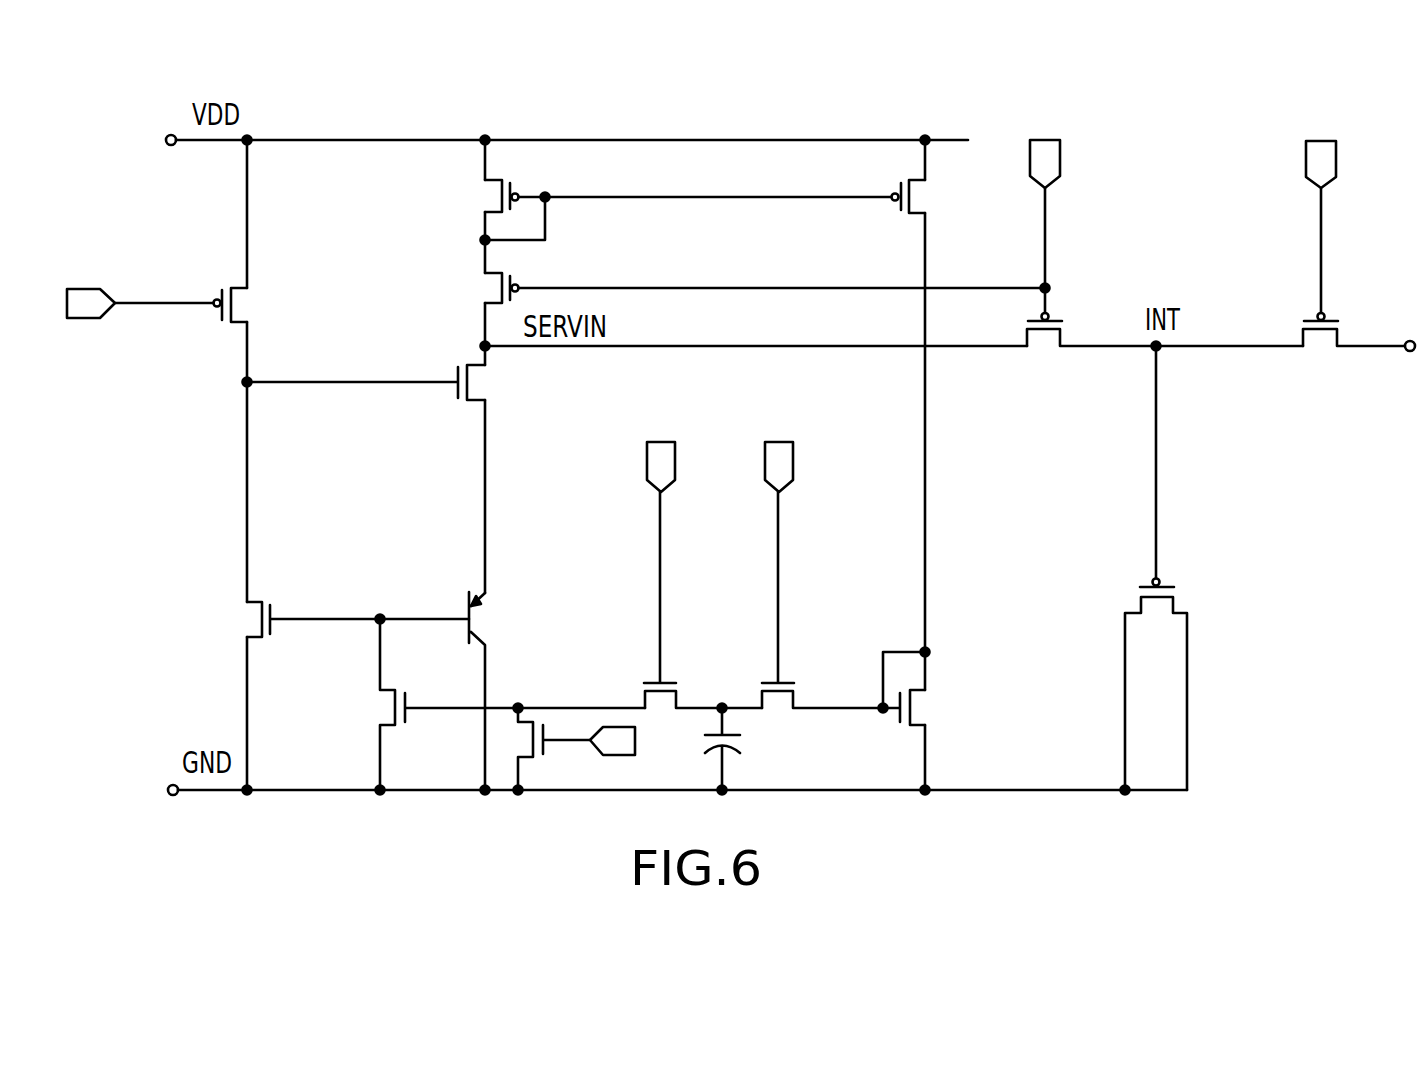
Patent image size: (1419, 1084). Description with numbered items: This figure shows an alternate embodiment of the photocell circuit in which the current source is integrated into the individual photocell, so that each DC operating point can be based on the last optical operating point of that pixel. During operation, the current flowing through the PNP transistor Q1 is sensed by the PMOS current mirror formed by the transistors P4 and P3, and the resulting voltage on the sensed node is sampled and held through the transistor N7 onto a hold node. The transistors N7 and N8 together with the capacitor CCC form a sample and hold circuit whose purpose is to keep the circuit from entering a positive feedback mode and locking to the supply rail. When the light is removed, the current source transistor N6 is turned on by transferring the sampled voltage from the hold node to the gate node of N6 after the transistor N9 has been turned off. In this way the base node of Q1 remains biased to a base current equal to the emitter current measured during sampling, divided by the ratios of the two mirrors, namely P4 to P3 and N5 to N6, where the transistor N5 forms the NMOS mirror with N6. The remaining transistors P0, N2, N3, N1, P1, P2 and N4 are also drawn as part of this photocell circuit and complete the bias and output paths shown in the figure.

The PMOS transistor P0 is at (179, 301).
The PMOS mirror transistor P4 is at (659, 198).
The NMOS transistor N2 is at (736, 273).
The NMOS transistor N3 is at (398, 388).
The NMOS transistor N1 is at (358, 594).
The PNP transistor Q1 is at (497, 689).
The current source transistor N6 is at (476, 704).
The switch transistor N9 is at (565, 749).
The sample and hold transistor N8 is at (681, 592).
The hold capacitor CCC is at (748, 747).
The sampling transistor N7 is at (800, 592).
The PMOS mirror transistor P3 is at (931, 180).
The NMOS mirror transistor N5 is at (923, 688).
The PMOS transistor P1 is at (1165, 243).
The PMOS transistor P2 is at (1359, 246).
The NMOS transistor N4 is at (1139, 568).